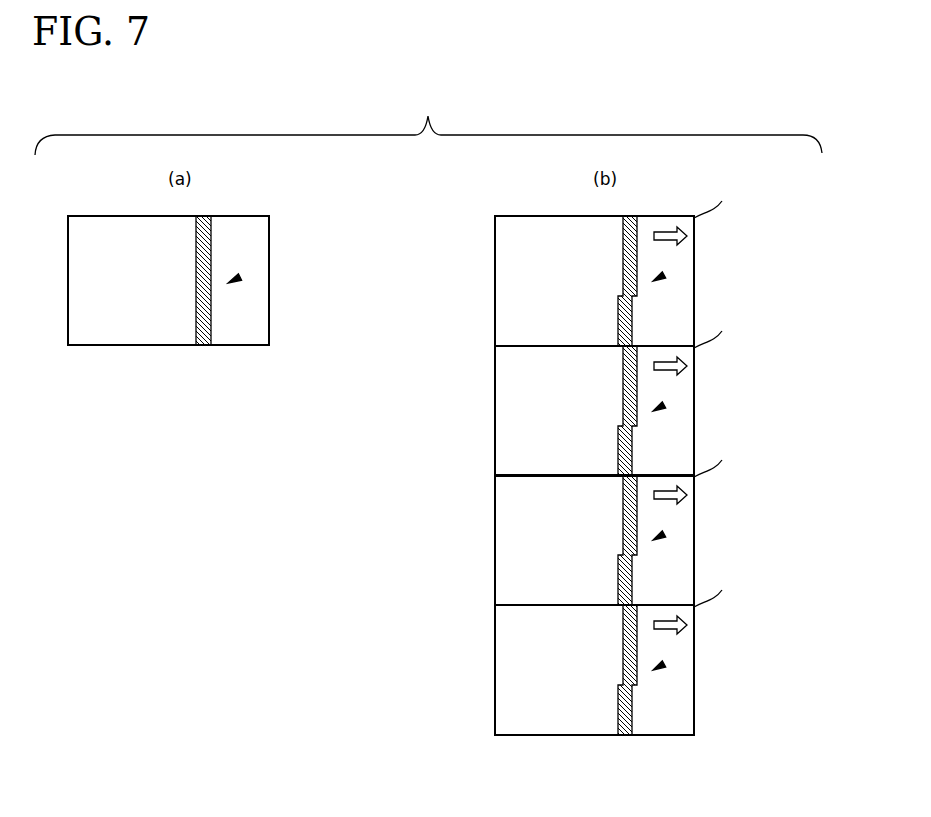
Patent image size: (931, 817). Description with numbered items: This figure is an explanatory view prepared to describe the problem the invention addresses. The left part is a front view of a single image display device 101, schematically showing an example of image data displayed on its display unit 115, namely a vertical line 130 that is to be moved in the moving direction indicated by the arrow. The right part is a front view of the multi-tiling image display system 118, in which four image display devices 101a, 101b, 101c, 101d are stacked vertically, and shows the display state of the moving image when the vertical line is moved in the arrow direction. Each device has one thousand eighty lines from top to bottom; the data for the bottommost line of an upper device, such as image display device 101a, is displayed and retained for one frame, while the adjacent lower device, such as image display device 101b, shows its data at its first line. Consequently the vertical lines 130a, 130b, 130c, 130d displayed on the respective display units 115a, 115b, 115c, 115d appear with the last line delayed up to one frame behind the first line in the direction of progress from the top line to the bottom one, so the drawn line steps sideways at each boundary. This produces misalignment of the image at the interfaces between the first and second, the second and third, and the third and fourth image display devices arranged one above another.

The image display device 101 is at (269, 233).
The display unit 115 is at (239, 277).
The vertical line 130 is at (196, 257).
The image display device 101a is at (694, 255).
The image display device 101b is at (694, 385).
The image display device 101c is at (694, 514).
The image display device 101d is at (694, 644).
The display unit 115a is at (662, 276).
The display unit 115b is at (662, 406).
The display unit 115c is at (662, 535).
The display unit 115d is at (662, 665).
The vertical line 130a is at (623, 282).
The vertical line 130b is at (623, 412).
The vertical line 130c is at (623, 541).
The vertical line 130d is at (623, 671).
The multi-tiling image display system 118 is at (679, 466).